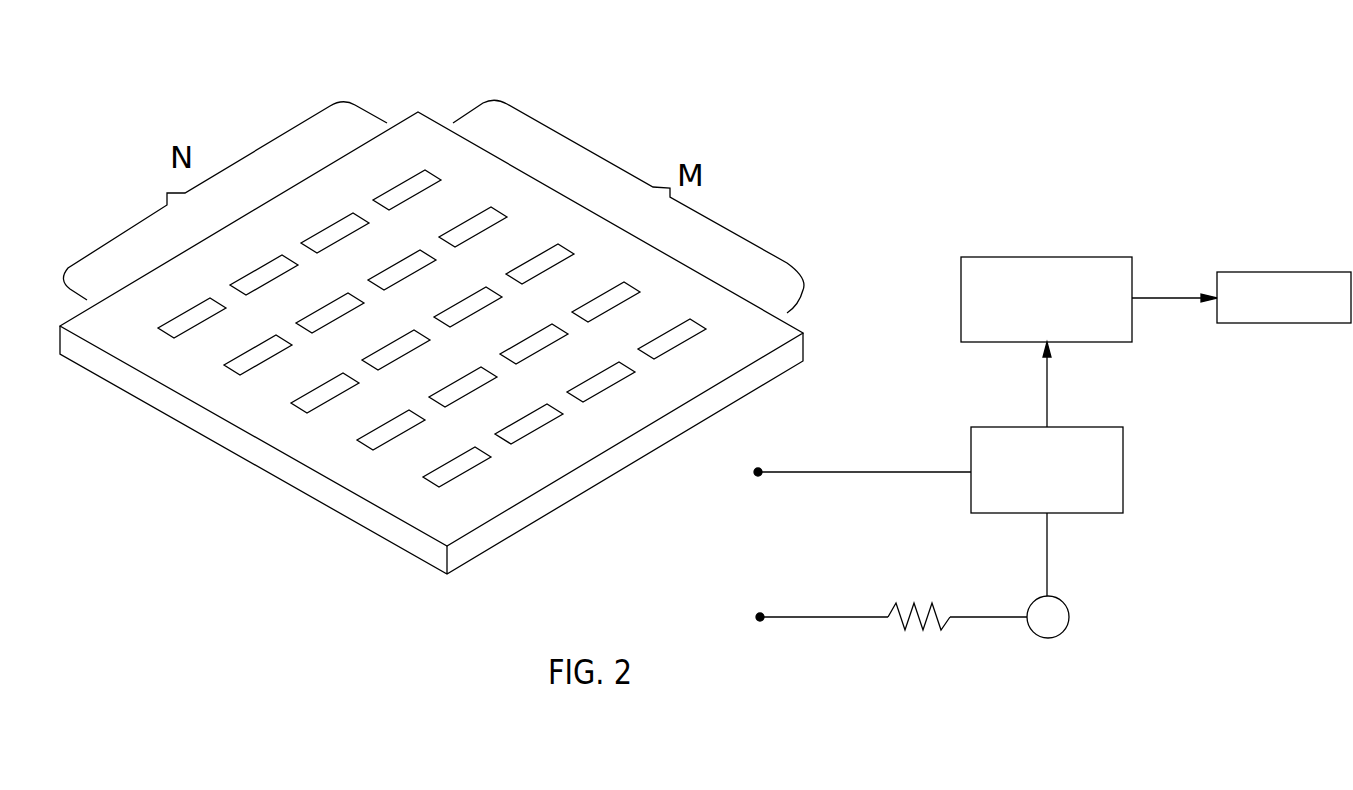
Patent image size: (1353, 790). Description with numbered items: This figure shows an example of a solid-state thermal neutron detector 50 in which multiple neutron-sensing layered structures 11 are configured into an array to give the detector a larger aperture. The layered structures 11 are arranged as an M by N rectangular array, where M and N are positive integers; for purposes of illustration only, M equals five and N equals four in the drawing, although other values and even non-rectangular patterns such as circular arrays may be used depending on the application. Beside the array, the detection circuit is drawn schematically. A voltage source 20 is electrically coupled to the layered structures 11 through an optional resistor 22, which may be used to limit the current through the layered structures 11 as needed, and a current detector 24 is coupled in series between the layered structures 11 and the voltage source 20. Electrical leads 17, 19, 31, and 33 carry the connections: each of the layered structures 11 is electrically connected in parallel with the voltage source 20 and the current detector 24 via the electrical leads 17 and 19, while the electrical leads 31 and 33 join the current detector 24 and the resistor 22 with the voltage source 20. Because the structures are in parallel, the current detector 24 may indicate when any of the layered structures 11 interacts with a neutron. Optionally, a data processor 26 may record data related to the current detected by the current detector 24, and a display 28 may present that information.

The layered structure 11 is at (246, 278).
The solid-state thermal neutron detector 50 is at (846, 221).
The data processor 26 is at (1044, 257).
The display 28 is at (1283, 272).
The current detector 24 is at (997, 427).
The electrical lead 17 is at (915, 471).
The electrical lead 31 is at (1047, 558).
The electrical lead 33 is at (998, 614).
The electrical lead 19 is at (811, 619).
The resistor 22 is at (941, 627).
The voltage source 20 is at (1069, 617).